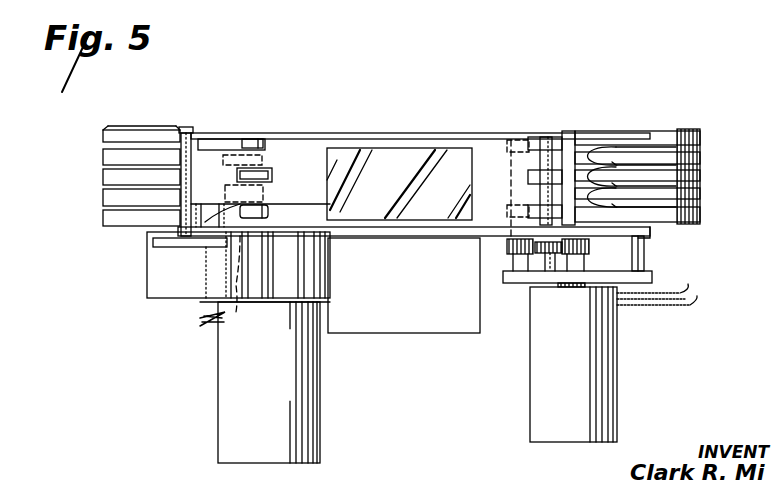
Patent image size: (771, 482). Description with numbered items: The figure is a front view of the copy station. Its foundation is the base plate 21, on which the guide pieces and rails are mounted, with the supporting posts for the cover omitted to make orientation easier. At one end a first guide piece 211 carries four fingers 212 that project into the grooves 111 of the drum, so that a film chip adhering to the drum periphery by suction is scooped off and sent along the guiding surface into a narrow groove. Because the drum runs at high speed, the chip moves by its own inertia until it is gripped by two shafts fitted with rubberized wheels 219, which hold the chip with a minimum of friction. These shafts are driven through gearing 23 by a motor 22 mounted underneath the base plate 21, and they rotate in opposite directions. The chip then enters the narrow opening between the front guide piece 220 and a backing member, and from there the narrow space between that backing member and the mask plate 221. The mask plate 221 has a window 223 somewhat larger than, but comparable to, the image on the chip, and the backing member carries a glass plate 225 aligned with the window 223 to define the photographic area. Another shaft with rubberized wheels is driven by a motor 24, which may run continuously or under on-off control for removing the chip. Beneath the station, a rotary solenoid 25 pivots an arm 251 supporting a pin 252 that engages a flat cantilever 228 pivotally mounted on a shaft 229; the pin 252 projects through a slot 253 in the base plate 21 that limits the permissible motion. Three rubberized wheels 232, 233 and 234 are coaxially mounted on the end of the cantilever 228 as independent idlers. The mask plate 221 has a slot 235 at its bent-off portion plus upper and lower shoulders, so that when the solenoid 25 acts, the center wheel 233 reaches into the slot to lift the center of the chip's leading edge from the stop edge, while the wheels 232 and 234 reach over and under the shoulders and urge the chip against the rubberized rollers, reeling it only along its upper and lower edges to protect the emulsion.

The base plate 21 is at (652, 236).
The motor 22 is at (585, 385).
The gearing 23 is at (536, 258).
The motor 24 is at (246, 375).
The rotary solenoid 25 is at (196, 277).
The grooves 111 is at (700, 206).
The first guide piece 211 is at (578, 160).
The fingers 212 is at (612, 190).
The rubberized wheels 219 is at (555, 140).
The front guide piece 220 is at (505, 150).
The mask plate 221 is at (492, 157).
The window 223 is at (402, 150).
The glass plate 225 is at (370, 172).
The cantilever 228 is at (212, 163).
The shaft 229 is at (186, 127).
The rubberized wheel 232 is at (262, 139).
The rubberized wheel 233 is at (272, 176).
The rubberized wheel 234 is at (272, 212).
The slot 235 is at (285, 158).
The arm 251 is at (153, 242).
The pin 252 is at (215, 222).
The slot 253 is at (238, 312).